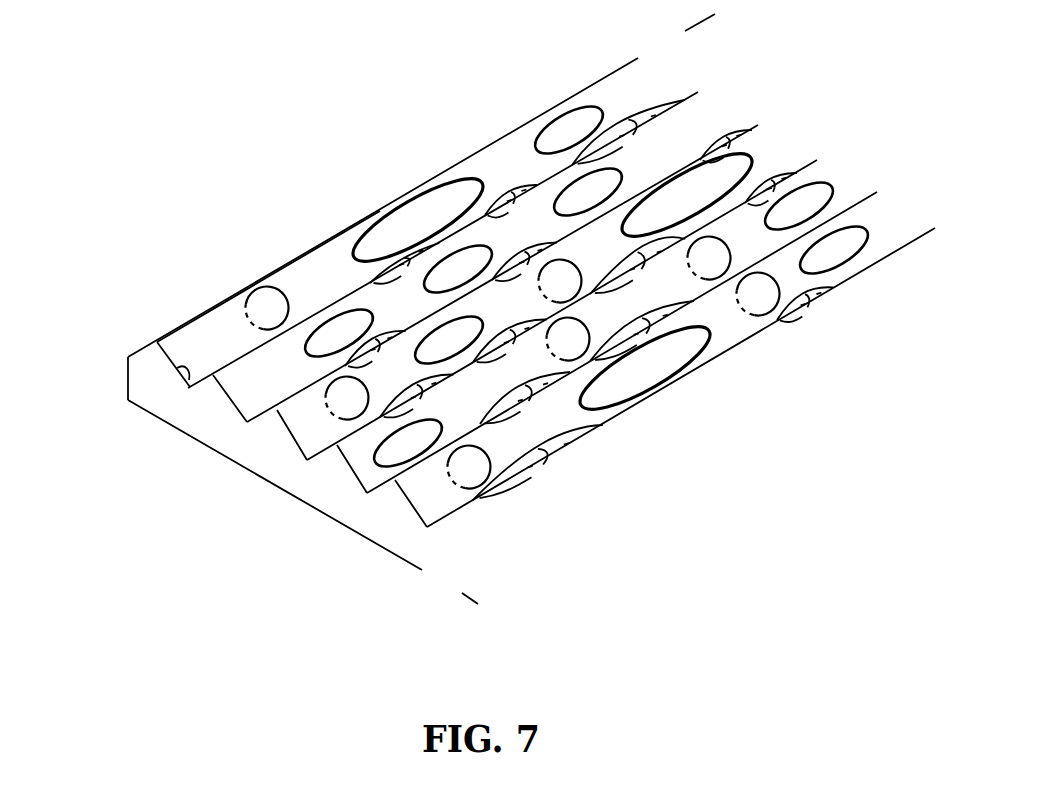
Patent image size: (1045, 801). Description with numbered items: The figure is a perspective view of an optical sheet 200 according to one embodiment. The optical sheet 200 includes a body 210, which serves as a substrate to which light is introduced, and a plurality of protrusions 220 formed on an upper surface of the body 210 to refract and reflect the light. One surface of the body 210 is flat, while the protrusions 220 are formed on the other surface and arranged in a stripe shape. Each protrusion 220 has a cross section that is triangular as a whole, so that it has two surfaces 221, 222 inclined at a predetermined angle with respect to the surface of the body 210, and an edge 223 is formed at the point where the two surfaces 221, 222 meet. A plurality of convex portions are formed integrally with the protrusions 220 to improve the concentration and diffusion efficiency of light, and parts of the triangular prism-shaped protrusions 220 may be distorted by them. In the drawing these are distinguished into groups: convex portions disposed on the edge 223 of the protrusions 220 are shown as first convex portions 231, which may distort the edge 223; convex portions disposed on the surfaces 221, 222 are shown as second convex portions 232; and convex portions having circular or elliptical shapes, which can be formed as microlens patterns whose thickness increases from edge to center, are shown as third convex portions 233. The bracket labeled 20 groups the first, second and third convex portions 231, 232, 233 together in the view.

The optical sheet 200 is at (481, 38).
The body 210 is at (298, 472).
The protrusions 220 is at (491, 270).
The surface 221 is at (140, 355).
The surface 222 is at (188, 389).
The edge 223 is at (228, 353).
The opening pattern 20 is at (308, 167).
The first convex portions 231 is at (301, 326).
The second convex portions 232 is at (362, 256).
The third convex portions 233 is at (252, 302).